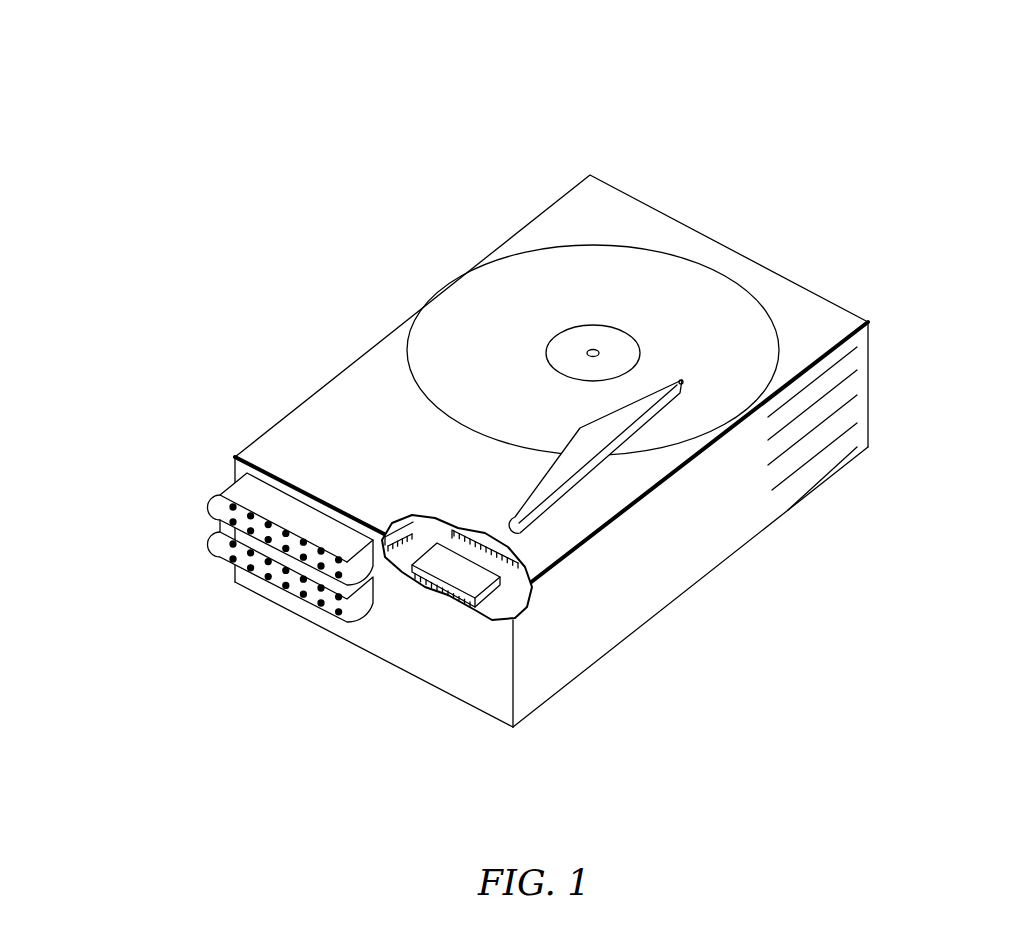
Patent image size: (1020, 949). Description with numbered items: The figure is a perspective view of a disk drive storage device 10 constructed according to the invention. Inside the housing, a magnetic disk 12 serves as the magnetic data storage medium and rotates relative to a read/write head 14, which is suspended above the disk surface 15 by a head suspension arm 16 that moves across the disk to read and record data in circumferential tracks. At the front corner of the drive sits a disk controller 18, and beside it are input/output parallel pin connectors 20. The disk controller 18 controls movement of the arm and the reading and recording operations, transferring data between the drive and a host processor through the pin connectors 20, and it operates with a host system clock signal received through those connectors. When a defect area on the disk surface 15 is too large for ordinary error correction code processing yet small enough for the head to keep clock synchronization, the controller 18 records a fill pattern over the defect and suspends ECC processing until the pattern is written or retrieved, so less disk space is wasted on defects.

The disk drive storage device 10 is at (426, 148).
The magnetic disk 12 is at (702, 295).
The read/write head 14 is at (683, 378).
The disk surface 15 is at (486, 354).
The head suspension arm 16 is at (607, 452).
The disk controller 18 is at (458, 575).
The input/output parallel pin connectors 20 is at (165, 527).